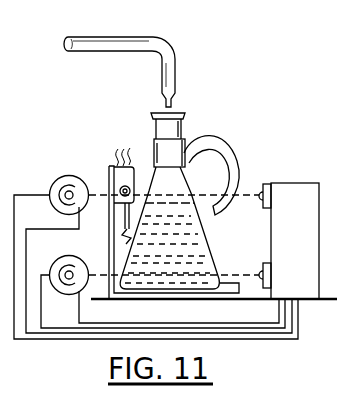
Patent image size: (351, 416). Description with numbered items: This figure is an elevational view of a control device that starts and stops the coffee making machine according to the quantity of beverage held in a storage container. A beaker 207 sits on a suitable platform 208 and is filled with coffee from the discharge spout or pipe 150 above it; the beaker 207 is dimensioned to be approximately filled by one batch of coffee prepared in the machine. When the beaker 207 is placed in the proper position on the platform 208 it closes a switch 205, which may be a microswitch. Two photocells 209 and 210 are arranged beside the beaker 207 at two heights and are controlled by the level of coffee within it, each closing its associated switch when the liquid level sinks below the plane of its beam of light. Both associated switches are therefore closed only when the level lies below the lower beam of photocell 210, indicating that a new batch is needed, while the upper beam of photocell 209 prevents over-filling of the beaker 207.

The discharge spout 150 is at (107, 35).
The switch 205 is at (131, 159).
The beaker 207 is at (195, 240).
The platform 208 is at (148, 285).
The photocell 209 is at (64, 175).
The photocell 210 is at (75, 254).